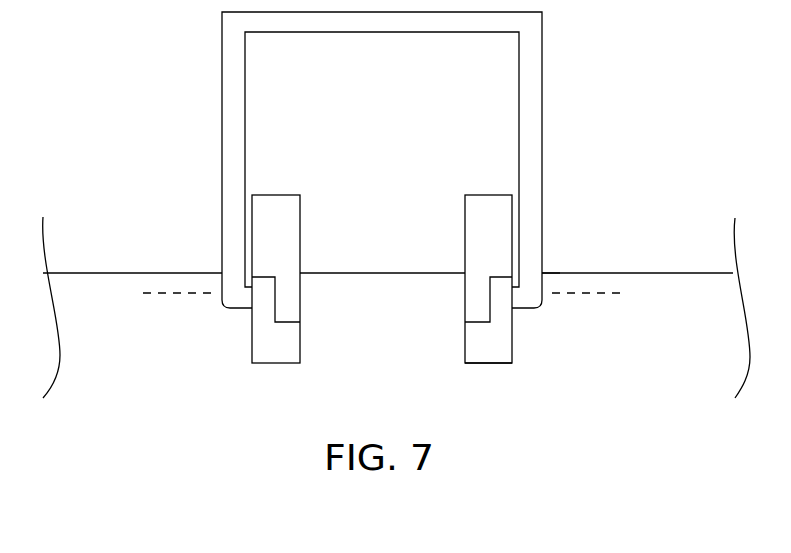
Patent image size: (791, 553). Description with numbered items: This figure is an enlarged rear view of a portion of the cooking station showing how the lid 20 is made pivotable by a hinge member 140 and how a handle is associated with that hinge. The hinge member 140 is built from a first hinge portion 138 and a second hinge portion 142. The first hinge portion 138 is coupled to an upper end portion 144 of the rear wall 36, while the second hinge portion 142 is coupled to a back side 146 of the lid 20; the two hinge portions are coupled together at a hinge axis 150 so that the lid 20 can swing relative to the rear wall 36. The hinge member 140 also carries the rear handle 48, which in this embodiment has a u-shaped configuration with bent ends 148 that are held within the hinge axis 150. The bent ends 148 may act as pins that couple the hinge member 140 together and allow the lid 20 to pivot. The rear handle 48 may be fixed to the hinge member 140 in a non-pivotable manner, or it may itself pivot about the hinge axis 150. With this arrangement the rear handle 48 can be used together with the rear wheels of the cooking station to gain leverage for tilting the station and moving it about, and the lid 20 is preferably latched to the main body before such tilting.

The rear handle 48 is at (535, 67).
The second hinge portion 142 is at (288, 215).
The first hinge portion 138 is at (267, 342).
The back side 146 is at (333, 260).
The lid 20 is at (106, 277).
The bent ends 148 is at (242, 300).
The rear wall 36 is at (656, 283).
The upper end portion 144 is at (566, 283).
The hinge axis 150 is at (620, 293).
The hinge member 140 is at (542, 349).